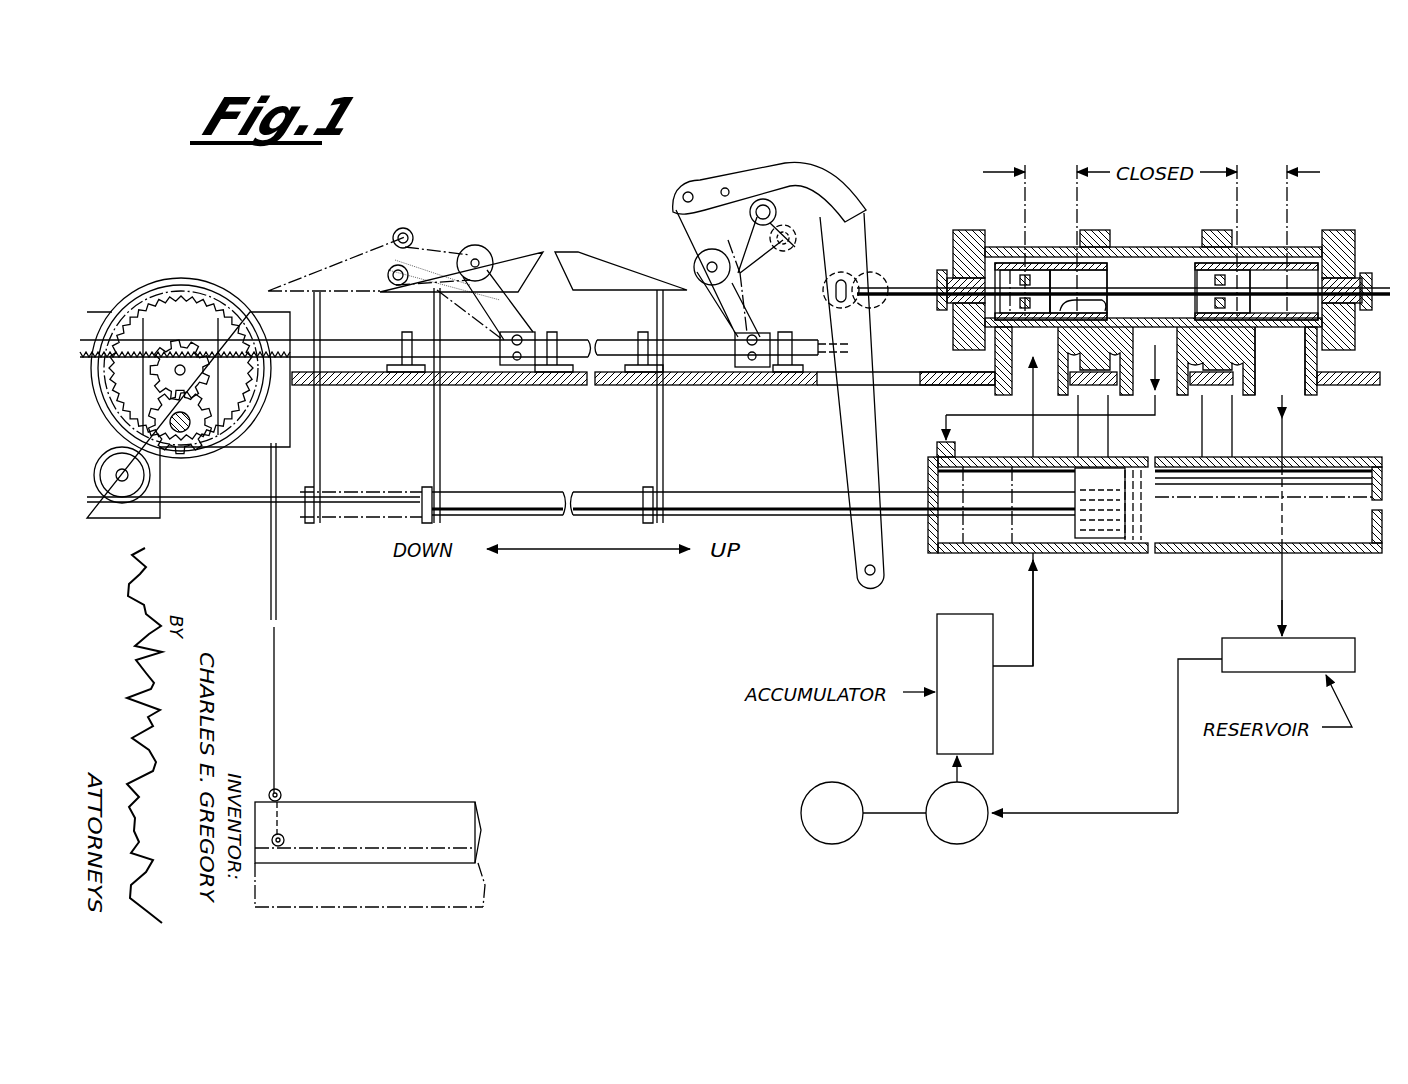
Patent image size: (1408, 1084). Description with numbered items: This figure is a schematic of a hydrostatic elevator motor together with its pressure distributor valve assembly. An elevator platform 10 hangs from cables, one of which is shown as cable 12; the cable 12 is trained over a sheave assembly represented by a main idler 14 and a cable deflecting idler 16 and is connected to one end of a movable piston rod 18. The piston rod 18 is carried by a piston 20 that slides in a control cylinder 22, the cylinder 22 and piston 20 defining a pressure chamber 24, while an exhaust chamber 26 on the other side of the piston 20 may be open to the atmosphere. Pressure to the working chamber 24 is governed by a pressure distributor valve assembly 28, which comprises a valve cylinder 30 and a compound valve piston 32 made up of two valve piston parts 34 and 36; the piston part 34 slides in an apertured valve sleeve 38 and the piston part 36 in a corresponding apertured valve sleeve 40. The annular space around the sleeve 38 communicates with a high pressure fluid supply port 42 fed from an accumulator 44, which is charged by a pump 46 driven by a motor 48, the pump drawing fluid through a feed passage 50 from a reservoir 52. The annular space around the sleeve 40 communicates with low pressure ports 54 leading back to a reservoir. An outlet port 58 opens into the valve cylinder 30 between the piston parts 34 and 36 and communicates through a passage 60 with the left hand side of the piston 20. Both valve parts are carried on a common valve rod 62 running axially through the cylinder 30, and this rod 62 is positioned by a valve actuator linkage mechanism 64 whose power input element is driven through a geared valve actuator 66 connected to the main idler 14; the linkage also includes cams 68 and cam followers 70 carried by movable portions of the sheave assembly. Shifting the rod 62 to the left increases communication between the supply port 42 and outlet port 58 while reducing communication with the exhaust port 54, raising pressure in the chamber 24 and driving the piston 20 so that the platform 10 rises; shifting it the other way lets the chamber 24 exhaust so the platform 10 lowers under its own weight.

The elevator platform 10 is at (381, 822).
The cable 12 is at (276, 682).
The main idler 14 is at (232, 268).
The cable deflecting idler 16 is at (122, 490).
The piston rod 18 is at (510, 497).
The piston 20 is at (1105, 510).
The control cylinder 22 is at (1243, 548).
The pressure chamber 24 is at (987, 527).
The exhaust chamber 26 is at (1215, 505).
The pressure distributor valve assembly 28 is at (1160, 246).
The valve cylinder 30 is at (1040, 247).
The compound valve piston 32 is at (1130, 282).
The valve piston part 34 is at (1012, 258).
The valve piston part 36 is at (1230, 258).
The apertured valve sleeve 38 is at (1105, 305).
The apertured valve sleeve 40 is at (1280, 361).
The high pressure fluid supply port 42 is at (1045, 392).
The accumulator 44 is at (938, 642).
The pump 46 is at (963, 843).
The motor 48 is at (840, 843).
The feed passage 50 is at (1157, 815).
The reservoir 52 is at (1270, 653).
The low pressure ports 54 is at (1297, 390).
The outlet port 58 is at (1163, 392).
The passage 60 is at (980, 415).
The valve rod 62 is at (897, 285).
The valve actuator linkage mechanism 64 is at (797, 192).
The geared valve actuator 66 is at (176, 362).
The cams 68 is at (525, 250).
The cam followers 70 is at (406, 228).